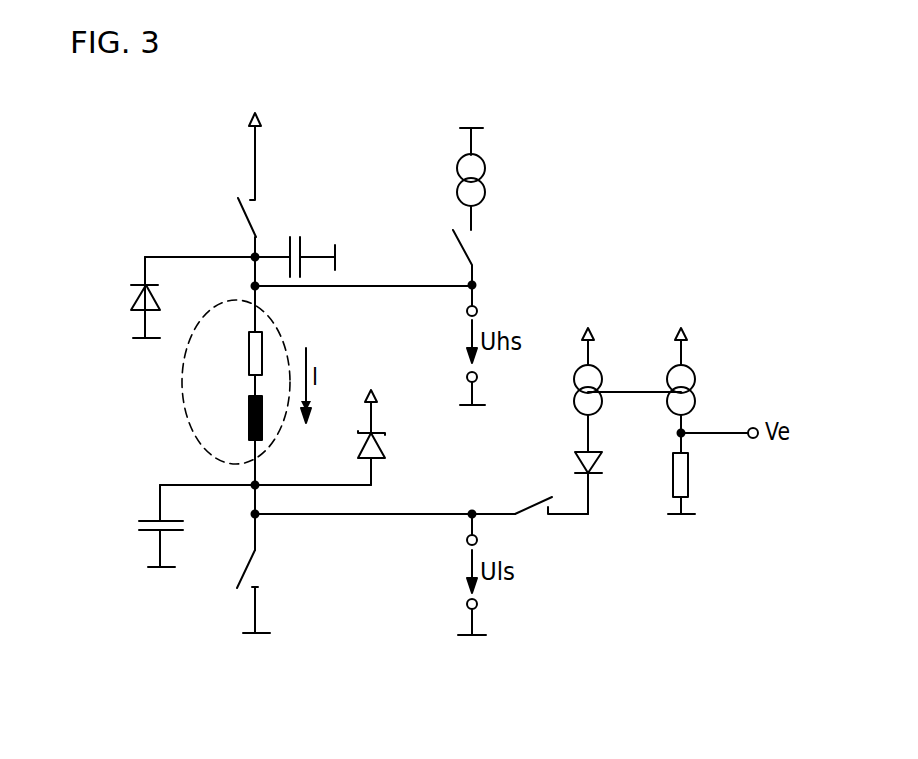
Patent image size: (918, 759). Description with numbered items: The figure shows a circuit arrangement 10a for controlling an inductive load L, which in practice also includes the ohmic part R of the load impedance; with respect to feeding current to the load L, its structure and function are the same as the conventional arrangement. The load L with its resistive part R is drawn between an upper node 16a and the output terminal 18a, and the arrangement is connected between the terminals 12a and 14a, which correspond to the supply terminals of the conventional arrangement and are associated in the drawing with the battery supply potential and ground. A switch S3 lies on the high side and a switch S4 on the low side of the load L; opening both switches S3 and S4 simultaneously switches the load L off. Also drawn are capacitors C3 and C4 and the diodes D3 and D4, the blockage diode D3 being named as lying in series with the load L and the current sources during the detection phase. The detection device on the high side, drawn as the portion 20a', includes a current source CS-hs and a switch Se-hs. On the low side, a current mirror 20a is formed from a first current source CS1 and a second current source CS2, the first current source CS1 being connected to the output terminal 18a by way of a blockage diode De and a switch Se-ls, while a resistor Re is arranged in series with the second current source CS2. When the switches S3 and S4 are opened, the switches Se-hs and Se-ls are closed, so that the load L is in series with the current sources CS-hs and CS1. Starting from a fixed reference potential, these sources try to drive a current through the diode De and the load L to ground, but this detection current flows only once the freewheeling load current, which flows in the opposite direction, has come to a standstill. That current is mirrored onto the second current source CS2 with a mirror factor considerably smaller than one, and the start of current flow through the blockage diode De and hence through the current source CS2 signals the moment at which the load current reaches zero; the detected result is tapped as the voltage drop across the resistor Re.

The circuit arrangement 10a is at (332, 102).
The supply terminal / high-side node 12a is at (255, 166).
The ground terminal / low-side node 14a is at (257, 613).
The high-side load node 16a is at (251, 287).
The output terminal 18a is at (258, 517).
The current mirror 20a is at (722, 257).
The high-side evaluation circuit 20a' is at (561, 114).
The switch S3 is at (246, 220).
The switch S4 is at (246, 570).
The capacitor C3 is at (298, 232).
The capacitor C4 is at (138, 527).
The blockage diode D3 is at (140, 293).
The zener diode D4 is at (380, 446).
The ohmic part of the load impedance R is at (247, 352).
The inductive load L is at (247, 420).
The current source CS-hs is at (457, 176).
The switch Se-hs is at (462, 250).
The switch Se-ls is at (533, 501).
The first current source CS1 is at (598, 372).
The second current source CS2 is at (697, 383).
The blockage diode De is at (578, 463).
The resistor Re is at (690, 476).